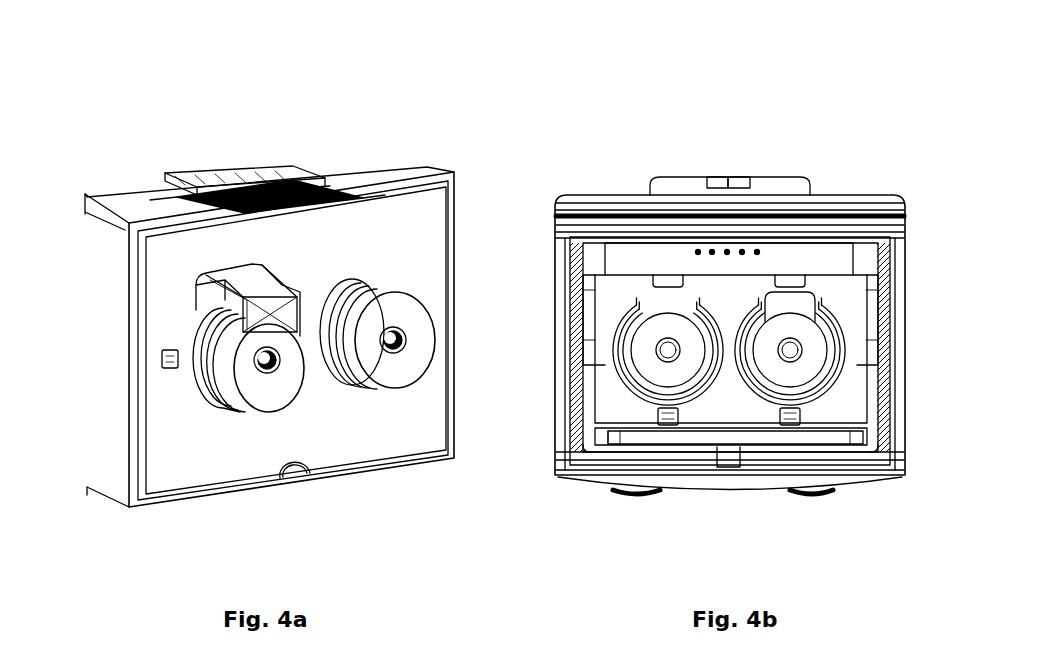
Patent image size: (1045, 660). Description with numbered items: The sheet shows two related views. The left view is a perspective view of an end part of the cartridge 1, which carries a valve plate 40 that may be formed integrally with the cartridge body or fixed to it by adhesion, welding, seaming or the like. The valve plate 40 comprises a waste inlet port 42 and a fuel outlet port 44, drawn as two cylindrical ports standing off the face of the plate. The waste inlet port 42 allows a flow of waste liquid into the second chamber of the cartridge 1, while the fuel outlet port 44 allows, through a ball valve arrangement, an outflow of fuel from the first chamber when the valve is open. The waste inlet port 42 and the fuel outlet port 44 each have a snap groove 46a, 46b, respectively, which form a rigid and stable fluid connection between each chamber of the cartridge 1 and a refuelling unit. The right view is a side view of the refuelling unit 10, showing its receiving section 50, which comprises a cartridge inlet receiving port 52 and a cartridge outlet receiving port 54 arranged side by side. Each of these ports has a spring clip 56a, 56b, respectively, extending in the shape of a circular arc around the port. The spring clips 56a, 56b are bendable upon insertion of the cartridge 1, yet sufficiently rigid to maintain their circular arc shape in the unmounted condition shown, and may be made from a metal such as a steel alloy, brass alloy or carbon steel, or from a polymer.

In FIG. 4A, the cartridge 1 is at (165, 114).
In FIG. 4B, the refuelling unit 10 is at (776, 132).
In FIG. 4A, the valve plate 40 is at (203, 465).
In FIG. 4A, the waste inlet port 42 is at (202, 336).
In FIG. 4A, the fuel outlet port 44 is at (385, 315).
In FIG. 4A, the snap groove 46a is at (212, 357).
In FIG. 4A, the snap groove 46b is at (343, 378).
In FIG. 4B, the receiving section 50 is at (588, 451).
In FIG. 4B, the cartridge inlet receiving port 52 is at (780, 378).
In FIG. 4B, the cartridge outlet receiving port 54 is at (660, 378).
In FIG. 4B, the spring clip 56a is at (820, 395).
In FIG. 4B, the spring clip 56b is at (695, 395).